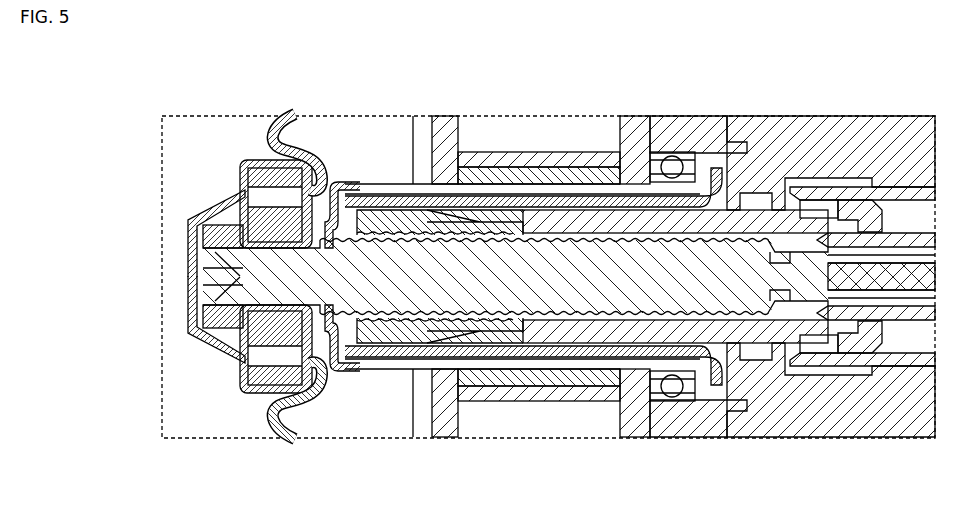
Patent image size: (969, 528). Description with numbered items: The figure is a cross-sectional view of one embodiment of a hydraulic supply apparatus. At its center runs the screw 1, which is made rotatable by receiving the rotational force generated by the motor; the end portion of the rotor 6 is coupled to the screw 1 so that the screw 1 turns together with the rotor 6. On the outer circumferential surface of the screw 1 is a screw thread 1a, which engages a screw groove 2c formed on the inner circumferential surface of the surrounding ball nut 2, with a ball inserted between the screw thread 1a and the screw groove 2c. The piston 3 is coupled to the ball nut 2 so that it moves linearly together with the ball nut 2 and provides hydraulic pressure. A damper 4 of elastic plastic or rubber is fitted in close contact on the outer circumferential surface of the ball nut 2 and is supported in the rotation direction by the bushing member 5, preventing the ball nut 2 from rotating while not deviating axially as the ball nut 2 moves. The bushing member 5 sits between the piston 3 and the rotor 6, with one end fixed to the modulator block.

The screw 1 is at (212, 260).
The screw thread 1a is at (452, 240).
The ball nut 2 is at (395, 378).
The screw groove 2c is at (483, 233).
The piston 3 is at (585, 222).
The damper 4 is at (447, 372).
The bushing member 5 is at (382, 196).
The rotor 6 is at (358, 184).